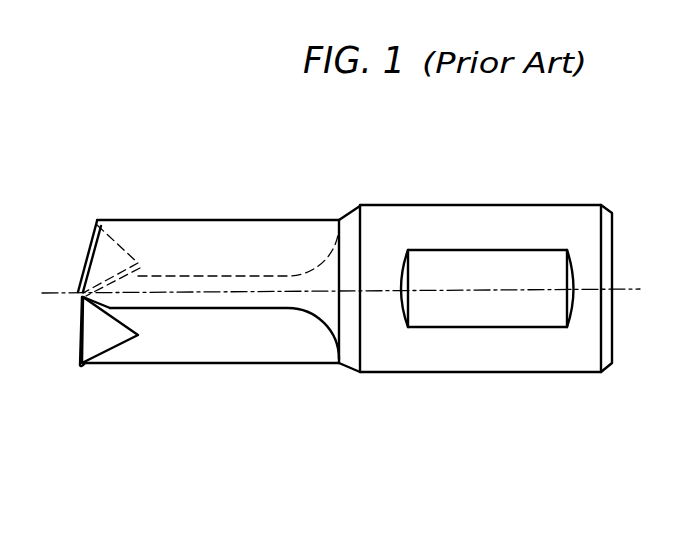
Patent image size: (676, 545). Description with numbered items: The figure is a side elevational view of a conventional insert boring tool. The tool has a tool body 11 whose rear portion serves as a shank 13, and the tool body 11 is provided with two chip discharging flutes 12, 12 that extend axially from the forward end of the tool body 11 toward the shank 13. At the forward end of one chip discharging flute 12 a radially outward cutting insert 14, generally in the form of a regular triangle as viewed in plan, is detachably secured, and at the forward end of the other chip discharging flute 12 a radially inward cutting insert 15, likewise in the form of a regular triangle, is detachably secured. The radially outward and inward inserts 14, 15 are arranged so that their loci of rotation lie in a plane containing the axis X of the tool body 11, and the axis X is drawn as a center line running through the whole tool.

The tool body 11 is at (349, 208).
The chip discharging flute 12 is at (240, 240).
The shank 13 is at (468, 373).
The radially outward cutting insert 14 is at (80, 350).
The radially inward cutting insert 15 is at (80, 261).
The axis X is at (183, 292).